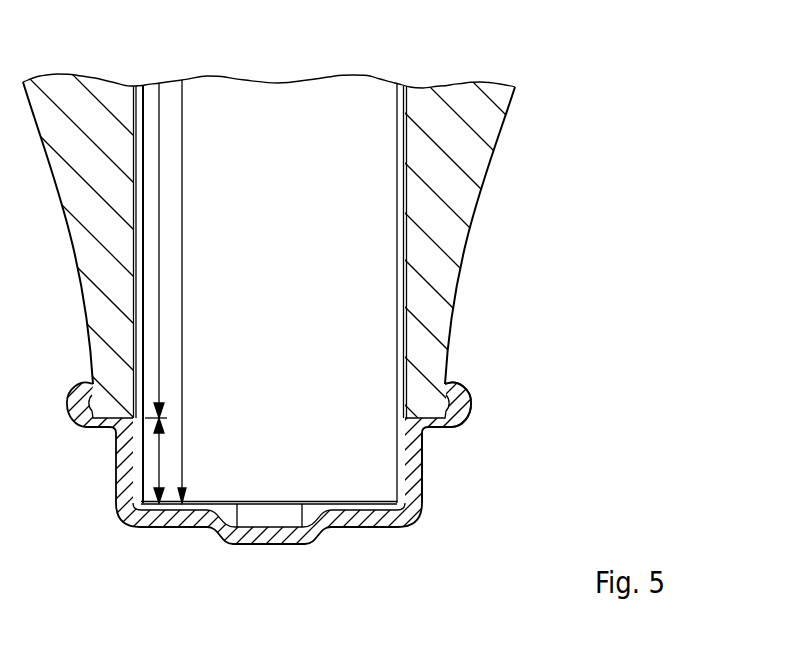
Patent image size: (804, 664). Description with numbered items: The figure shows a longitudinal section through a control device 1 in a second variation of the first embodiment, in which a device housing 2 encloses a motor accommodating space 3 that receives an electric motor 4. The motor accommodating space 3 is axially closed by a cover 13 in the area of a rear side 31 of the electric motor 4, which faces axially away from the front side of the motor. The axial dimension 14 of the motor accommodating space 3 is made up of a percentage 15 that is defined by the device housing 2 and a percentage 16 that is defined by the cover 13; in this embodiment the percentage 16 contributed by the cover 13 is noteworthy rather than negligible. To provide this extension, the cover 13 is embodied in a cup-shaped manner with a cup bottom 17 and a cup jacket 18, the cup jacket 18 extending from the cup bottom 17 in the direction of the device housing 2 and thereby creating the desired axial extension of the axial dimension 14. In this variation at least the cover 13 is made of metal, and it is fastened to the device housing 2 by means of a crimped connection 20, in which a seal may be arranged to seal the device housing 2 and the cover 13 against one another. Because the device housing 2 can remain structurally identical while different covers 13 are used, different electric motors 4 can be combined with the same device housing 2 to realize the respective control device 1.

The control device 1 is at (562, 152).
The device housing 2 is at (450, 350).
The motor accommodating space 3 is at (404, 305).
The electric motor 4 is at (398, 248).
The cover 13 is at (427, 503).
The axial dimension of the motor accommodating space 14 is at (182, 327).
The percentage of the dimension defined by the device housing 15 is at (158, 327).
The percentage of the dimension defined by the cover 16 is at (158, 465).
The cup bottom 17 is at (358, 520).
The cup jacket 18 is at (423, 470).
The crimped connection 20 is at (480, 407).
The rear side of the electric motor 31 is at (202, 507).